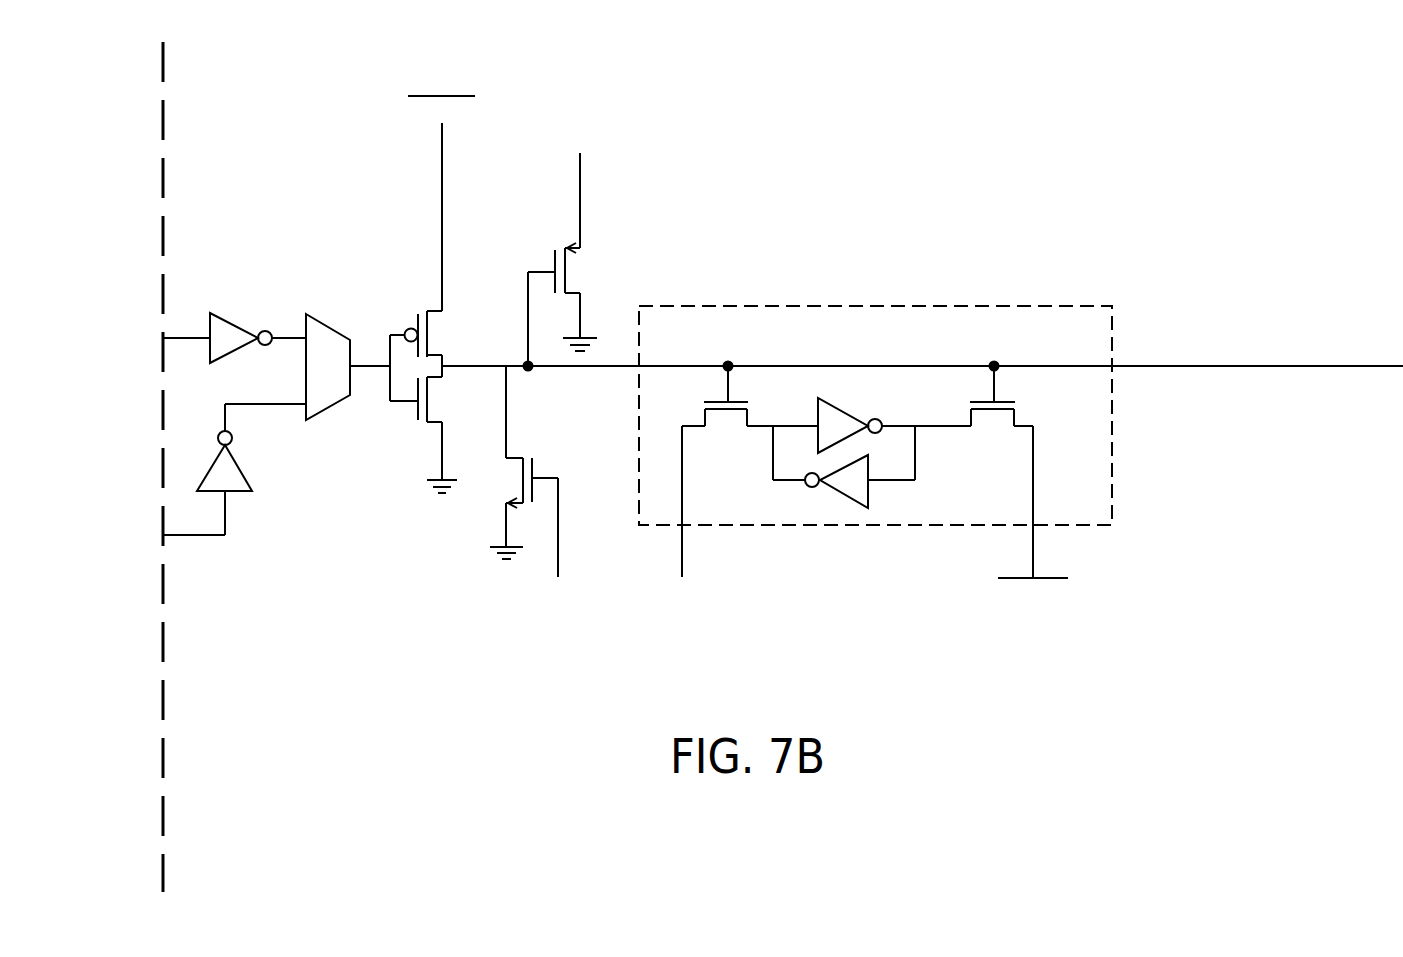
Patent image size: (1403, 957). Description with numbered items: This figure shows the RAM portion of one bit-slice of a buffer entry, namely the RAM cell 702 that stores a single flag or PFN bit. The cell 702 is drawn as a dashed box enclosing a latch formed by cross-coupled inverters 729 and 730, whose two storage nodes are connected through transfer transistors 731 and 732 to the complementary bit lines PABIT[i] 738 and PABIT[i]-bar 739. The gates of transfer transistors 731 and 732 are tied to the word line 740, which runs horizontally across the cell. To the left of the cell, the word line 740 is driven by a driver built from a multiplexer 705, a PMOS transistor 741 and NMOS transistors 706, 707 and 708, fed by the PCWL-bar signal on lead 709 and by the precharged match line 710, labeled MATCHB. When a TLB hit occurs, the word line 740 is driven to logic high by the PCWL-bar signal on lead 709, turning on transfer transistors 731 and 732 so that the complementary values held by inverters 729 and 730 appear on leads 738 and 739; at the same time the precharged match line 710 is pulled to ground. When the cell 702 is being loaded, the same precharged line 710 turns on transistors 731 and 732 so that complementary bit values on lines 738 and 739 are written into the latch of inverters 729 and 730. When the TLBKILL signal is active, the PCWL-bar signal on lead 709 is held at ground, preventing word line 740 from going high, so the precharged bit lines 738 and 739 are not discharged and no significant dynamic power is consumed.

The RAM cell 702 is at (843, 305).
The multiplexer 705 is at (332, 327).
The NMOS transistor 706 is at (397, 402).
The NMOS transistor 707 is at (537, 267).
The NMOS transistor 708 is at (558, 527).
The PCWL-bar lead 709 is at (442, 180).
The precharged match line 710 is at (580, 205).
The inverter 729 is at (870, 497).
The inverter 730 is at (817, 422).
The transfer transistor 731 is at (735, 414).
The transfer transistor 732 is at (1000, 414).
The PABIT[i] lead 738 is at (683, 537).
The PABIT[i]-bar lead 739 is at (1033, 537).
The word line 740 is at (692, 366).
The PMOS transistor 741 is at (427, 311).